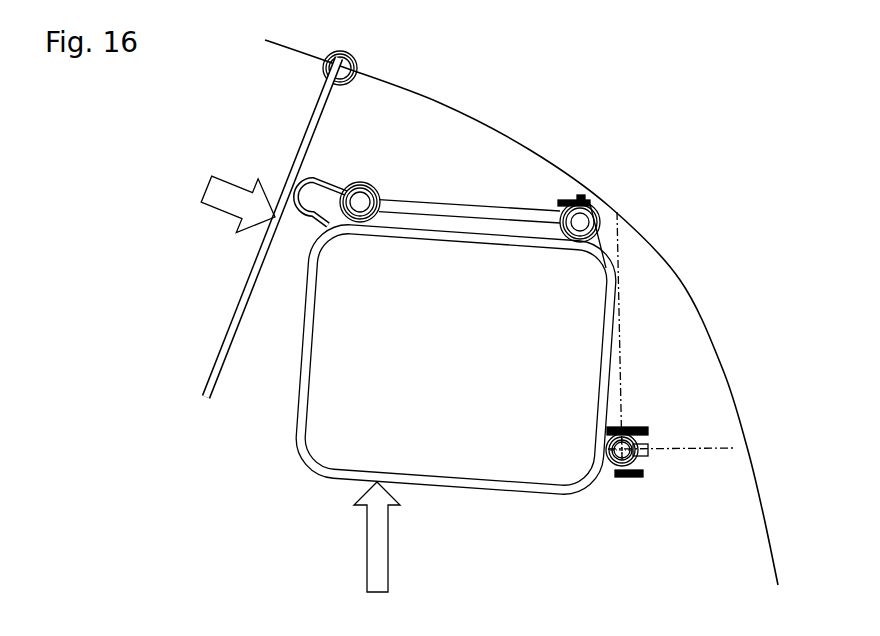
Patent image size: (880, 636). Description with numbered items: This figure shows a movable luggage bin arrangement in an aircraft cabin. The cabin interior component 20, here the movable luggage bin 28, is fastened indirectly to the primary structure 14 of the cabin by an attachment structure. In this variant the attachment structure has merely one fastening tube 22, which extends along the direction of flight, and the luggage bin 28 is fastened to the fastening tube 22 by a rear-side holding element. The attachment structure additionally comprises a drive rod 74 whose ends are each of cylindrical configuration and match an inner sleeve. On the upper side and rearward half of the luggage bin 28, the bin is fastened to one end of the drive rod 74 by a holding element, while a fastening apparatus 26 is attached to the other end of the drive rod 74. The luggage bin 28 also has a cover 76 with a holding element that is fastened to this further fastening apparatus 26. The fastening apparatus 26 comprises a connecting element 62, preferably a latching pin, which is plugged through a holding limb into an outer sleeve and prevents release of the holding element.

The primary structure 14 is at (520, 149).
The cover 76 is at (236, 330).
The fastening apparatus 26 is at (371, 170).
The drive rod 74 is at (398, 205).
The cabin interior component 20 is at (456, 378).
The luggage bin 28 is at (412, 480).
The fastening tube 22 is at (636, 456).
The connecting element 62 is at (624, 477).